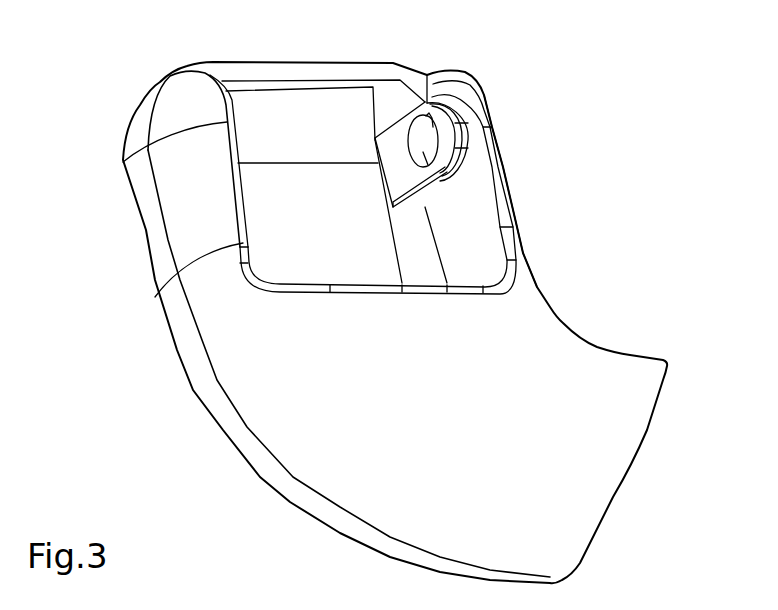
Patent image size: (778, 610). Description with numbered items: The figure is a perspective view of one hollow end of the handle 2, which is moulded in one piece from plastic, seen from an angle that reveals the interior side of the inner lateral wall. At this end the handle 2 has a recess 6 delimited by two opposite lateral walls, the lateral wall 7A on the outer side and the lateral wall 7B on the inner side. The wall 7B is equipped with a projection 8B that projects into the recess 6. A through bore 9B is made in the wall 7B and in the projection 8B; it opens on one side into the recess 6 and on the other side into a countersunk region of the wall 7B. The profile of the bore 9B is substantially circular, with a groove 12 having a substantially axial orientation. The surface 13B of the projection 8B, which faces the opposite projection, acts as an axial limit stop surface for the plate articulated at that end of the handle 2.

The handle 2 is at (624, 121).
The recess 6 is at (308, 247).
The lateral wall on the outer side 7A is at (183, 203).
The lateral wall on the inner side 7B is at (472, 228).
The projection 8B is at (460, 147).
The through bore 9B is at (447, 175).
The groove 12 is at (427, 75).
The surface of the projection 13B is at (404, 169).